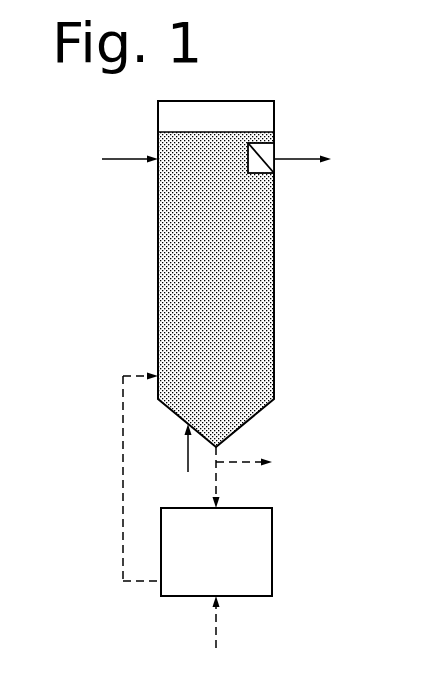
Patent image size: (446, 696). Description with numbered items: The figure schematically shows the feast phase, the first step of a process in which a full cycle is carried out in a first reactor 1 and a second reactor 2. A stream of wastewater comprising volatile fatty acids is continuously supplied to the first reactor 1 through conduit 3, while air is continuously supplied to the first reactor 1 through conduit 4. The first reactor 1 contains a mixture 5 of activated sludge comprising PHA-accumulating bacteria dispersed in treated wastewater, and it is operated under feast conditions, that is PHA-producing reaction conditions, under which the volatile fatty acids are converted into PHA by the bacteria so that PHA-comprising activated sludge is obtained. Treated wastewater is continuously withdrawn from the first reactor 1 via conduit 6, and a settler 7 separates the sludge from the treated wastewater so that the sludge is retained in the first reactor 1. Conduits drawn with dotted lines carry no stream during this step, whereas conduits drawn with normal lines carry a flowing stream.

The first reactor 1 is at (152, 271).
The second reactor 2 is at (284, 539).
The conduit 3 is at (116, 158).
The conduit 4 is at (186, 456).
The mixture 5 is at (232, 292).
The conduit 6 is at (305, 158).
The settler 7 is at (264, 150).